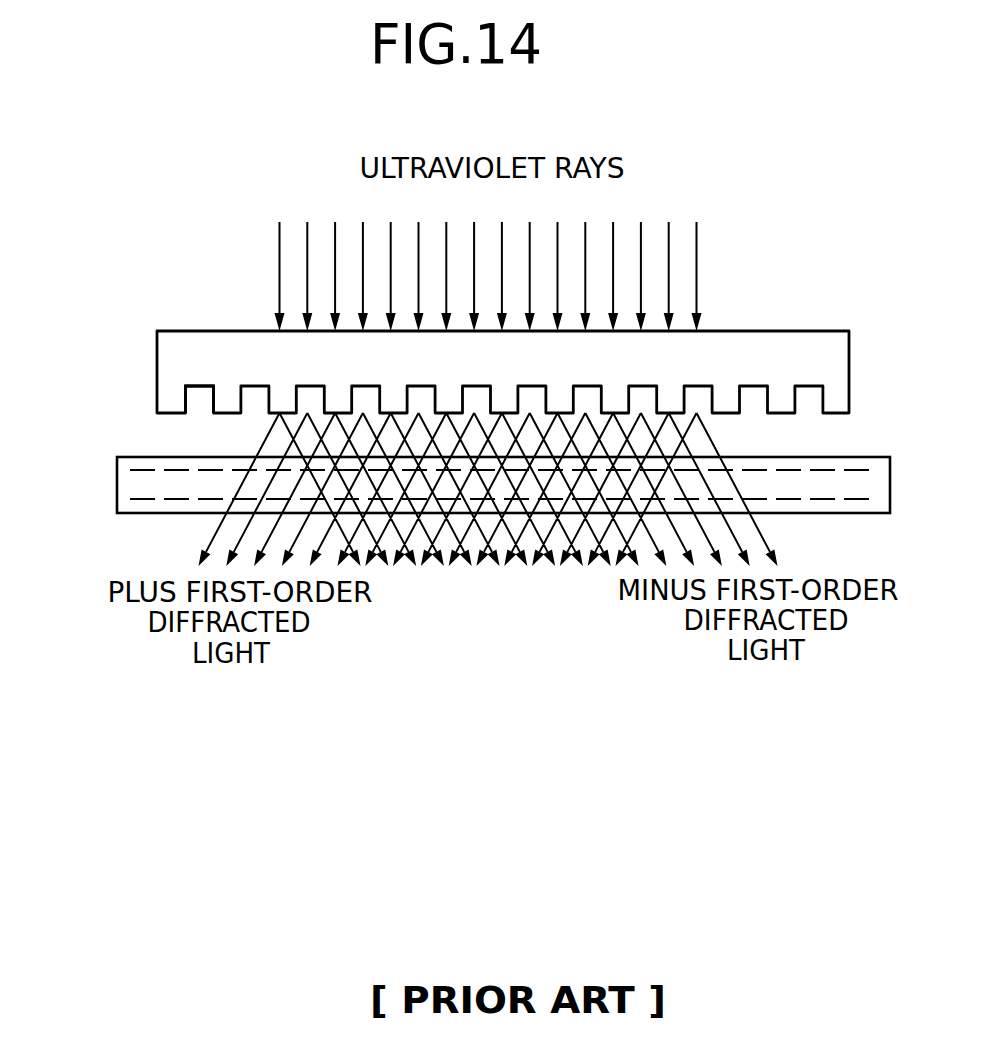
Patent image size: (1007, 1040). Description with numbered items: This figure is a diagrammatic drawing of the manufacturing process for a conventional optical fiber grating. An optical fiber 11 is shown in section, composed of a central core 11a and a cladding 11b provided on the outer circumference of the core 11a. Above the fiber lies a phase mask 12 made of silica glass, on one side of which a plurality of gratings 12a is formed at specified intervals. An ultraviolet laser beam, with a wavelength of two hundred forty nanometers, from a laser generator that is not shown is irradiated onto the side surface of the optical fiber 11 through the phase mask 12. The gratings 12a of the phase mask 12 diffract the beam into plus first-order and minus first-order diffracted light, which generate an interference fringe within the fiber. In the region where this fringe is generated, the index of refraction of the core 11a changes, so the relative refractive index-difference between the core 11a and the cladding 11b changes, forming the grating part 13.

The phase mask 12 is at (209, 331).
The gratings 12a is at (193, 395).
The optical fiber 11 is at (132, 458).
The core 11a is at (130, 489).
The cladding 11b is at (173, 507).
The grating part 13 is at (645, 608).